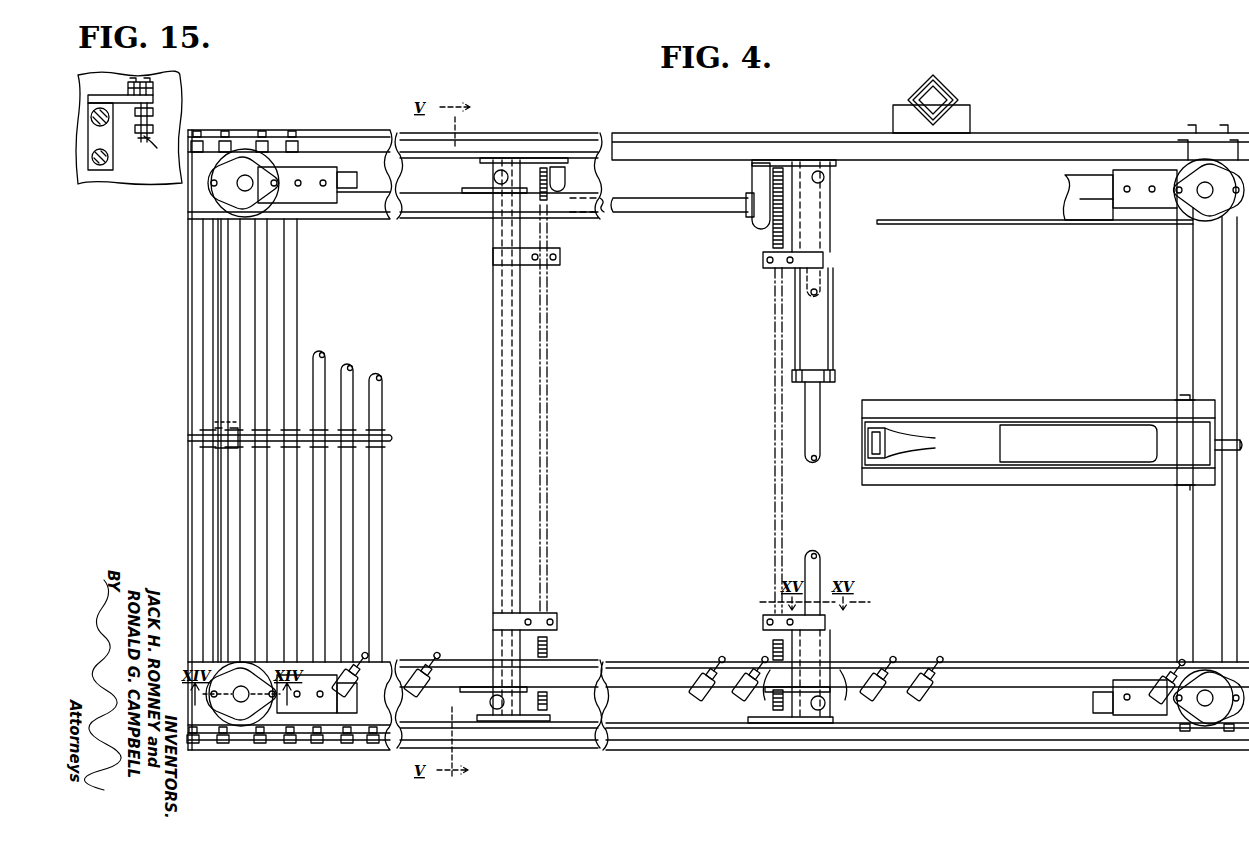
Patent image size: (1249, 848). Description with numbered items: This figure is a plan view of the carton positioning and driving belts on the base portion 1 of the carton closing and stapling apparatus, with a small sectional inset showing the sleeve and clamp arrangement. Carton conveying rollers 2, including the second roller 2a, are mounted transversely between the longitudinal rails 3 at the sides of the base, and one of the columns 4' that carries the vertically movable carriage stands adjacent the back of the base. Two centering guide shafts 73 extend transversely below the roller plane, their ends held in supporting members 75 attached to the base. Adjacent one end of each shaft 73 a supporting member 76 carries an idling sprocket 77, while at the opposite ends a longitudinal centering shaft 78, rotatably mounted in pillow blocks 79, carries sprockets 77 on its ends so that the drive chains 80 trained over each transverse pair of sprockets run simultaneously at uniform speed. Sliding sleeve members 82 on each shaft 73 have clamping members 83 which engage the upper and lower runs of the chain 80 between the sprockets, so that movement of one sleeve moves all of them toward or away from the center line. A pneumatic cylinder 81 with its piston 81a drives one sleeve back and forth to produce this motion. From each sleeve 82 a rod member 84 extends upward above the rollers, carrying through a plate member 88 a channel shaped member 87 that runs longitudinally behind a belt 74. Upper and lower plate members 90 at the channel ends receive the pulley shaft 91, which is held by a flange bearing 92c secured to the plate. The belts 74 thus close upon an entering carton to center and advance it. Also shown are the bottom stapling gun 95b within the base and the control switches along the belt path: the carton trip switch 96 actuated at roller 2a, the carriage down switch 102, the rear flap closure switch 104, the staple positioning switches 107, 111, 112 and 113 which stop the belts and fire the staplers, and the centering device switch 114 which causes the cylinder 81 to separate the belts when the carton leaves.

In FIG. 4, the base portion 1 is at (741, 759).
In FIG. 4, the carton conveying rollers 2 is at (297, 306).
In FIG. 4, the second roller 2a is at (188, 303).
In FIG. 4, the rails 3 is at (657, 133).
In FIG. 4, the column 4' is at (942, 98).
In FIG. 15, the centering guide shafts 73 is at (100, 108).
In FIG. 4, the centering guide shafts 73 is at (822, 284).
In FIG. 4, the belts 74 is at (1020, 224).
In FIG. 4, the supporting members 75 is at (506, 158).
In FIG. 4, the supporting member 76 is at (530, 706).
In FIG. 4, the sprockets 77 is at (543, 166).
In FIG. 4, the centering shaft 78 is at (660, 214).
In FIG. 4, the pillow blocks 79 is at (566, 193).
In FIG. 15, the drive chain 80 is at (149, 135).
In FIG. 4, the drive chain 80 is at (773, 331).
In FIG. 4, the pneumatic cylinder 81 is at (834, 331).
In FIG. 15, the piston 81a is at (100, 166).
In FIG. 4, the piston 81a is at (820, 408).
In FIG. 15, the sliding sleeve members 82 is at (112, 125).
In FIG. 4, the sliding sleeve members 82 is at (493, 240).
In FIG. 15, the clamping member 83 is at (155, 98).
In FIG. 4, the clamping member 83 is at (556, 266).
In FIG. 4, the rod member 84 is at (498, 711).
In FIG. 4, the channel shaped members 87 is at (378, 205).
In FIG. 4, the plate member 88 is at (840, 700).
In FIG. 4, the plate members 90 is at (327, 192).
In FIG. 4, the shaft 91 is at (245, 175).
In FIG. 4, the flange bearing 92c is at (263, 190).
In FIG. 4, the bottom gun 95b is at (957, 452).
In FIG. 4, the carton trip switch 96 is at (215, 447).
In FIG. 4, the carriage lowering or down switch 102 is at (408, 652).
In FIG. 4, the rear flap closure switch 104 is at (344, 700).
In FIG. 4, the staple positioning switch 107 is at (868, 672).
In FIG. 4, the staple positioning switch 111 is at (930, 702).
In FIG. 4, the staple positioning switch 112 is at (692, 702).
In FIG. 4, the staple positioning switch 113 is at (738, 698).
In FIG. 4, the centering device switch 114 is at (1160, 690).